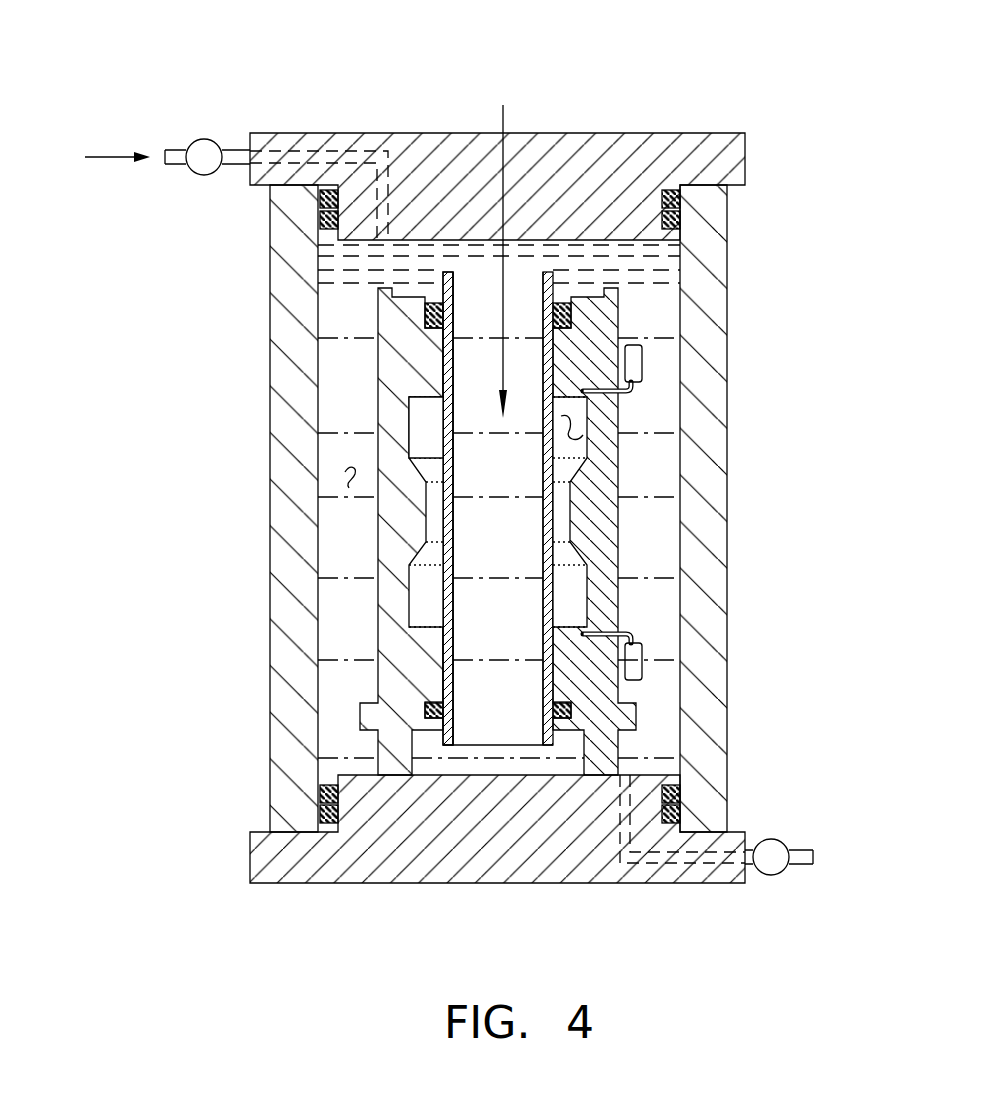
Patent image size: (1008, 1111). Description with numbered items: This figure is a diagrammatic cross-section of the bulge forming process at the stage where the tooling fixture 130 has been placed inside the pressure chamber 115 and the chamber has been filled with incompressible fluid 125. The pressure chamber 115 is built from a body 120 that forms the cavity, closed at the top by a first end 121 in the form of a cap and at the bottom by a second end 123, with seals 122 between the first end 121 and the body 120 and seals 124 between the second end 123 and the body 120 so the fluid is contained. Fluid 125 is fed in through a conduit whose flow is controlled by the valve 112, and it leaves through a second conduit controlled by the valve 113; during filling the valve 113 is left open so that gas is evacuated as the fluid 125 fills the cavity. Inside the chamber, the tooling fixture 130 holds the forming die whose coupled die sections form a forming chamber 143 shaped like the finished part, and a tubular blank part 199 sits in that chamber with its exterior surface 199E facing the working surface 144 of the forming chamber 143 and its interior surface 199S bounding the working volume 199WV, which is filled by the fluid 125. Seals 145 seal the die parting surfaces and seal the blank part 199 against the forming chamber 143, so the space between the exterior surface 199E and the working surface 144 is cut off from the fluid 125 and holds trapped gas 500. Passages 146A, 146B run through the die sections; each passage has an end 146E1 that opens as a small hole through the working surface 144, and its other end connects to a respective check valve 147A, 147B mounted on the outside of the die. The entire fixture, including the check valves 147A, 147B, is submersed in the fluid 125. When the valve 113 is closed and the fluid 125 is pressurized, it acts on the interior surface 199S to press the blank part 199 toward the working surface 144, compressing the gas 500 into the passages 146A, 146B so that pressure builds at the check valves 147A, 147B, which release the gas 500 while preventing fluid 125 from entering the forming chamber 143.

The valve 112 is at (193, 140).
The valve 113 is at (775, 877).
The pressure chamber 115 is at (514, 464).
The body 120 is at (707, 492).
The first end 121 is at (700, 133).
The seals 122 is at (672, 216).
The second end 123 is at (318, 883).
The seals 124 is at (322, 812).
The incompressible fluid 125 is at (345, 472).
The tooling fixture 130 is at (340, 681).
The forming chamber 143 is at (430, 450).
The working surface 144 is at (583, 435).
The seals 145 is at (430, 312).
The passage 146A is at (600, 398).
The passage 146B is at (628, 627).
The end of passage 146E1 is at (585, 388).
The check valve 147A is at (643, 362).
The check valve 147B is at (643, 665).
The blank part 199 is at (473, 562).
The exterior surface 199E is at (440, 623).
The interior surface 199S is at (455, 545).
The working volume 199WV is at (503, 105).
The gas 500 is at (432, 430).